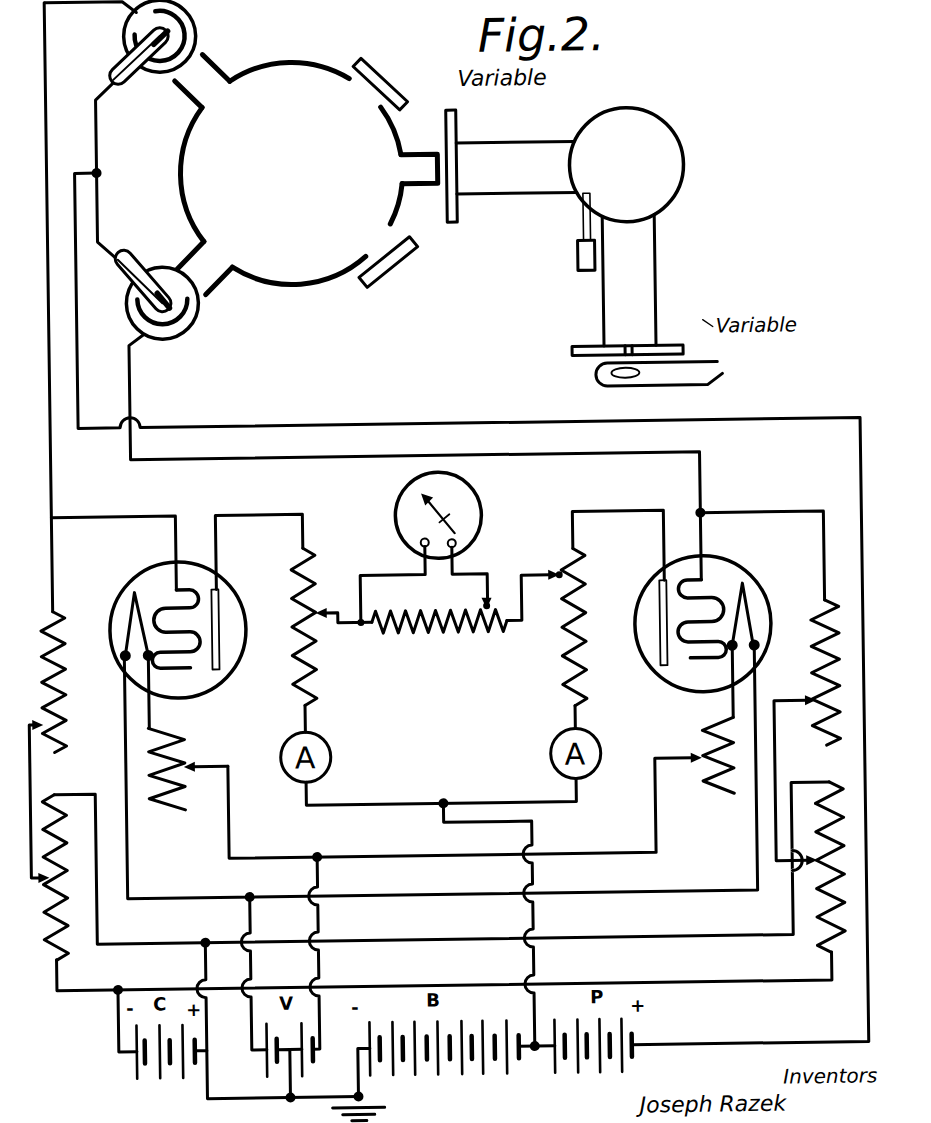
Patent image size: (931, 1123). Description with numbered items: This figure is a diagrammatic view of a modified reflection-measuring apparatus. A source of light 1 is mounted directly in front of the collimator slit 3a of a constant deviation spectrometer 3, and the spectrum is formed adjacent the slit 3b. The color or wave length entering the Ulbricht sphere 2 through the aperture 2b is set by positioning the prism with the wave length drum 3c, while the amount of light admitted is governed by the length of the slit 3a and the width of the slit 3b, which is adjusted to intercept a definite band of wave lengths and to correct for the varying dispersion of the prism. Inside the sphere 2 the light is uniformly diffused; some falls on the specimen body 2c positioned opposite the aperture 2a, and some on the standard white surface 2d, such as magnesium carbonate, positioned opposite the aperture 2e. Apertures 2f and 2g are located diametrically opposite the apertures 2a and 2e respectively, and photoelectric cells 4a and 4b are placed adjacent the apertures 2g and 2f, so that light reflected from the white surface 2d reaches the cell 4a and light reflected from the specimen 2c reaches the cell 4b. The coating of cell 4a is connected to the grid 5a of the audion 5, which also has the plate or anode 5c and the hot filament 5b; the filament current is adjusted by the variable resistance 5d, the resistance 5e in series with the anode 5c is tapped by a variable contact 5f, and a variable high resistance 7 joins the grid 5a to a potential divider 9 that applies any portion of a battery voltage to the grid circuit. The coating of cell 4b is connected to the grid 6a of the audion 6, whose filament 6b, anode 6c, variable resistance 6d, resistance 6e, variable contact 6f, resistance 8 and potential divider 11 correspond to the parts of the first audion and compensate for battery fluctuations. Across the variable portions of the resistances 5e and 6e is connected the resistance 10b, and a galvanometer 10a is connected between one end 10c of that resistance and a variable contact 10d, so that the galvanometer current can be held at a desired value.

The source of light 1 is at (710, 380).
The Ulbricht sphere 2 is at (291, 173).
The aperture 2a is at (374, 84).
The aperture 2b is at (426, 159).
The specimen body 2c is at (390, 76).
The standard white surface 2d is at (402, 272).
The aperture 2e is at (387, 241).
The aperture 2f is at (207, 259).
The aperture 2g is at (205, 68).
The constant deviation spectrometer 3 is at (696, 128).
The collimator slit 3a is at (633, 349).
The slit 3b is at (463, 163).
The wave length drum 3c is at (582, 248).
The photoelectric cell 4a is at (204, 33).
The photoelectric cell 4b is at (200, 318).
The audion 5 is at (153, 561).
The grid 5a is at (181, 516).
The hot filament 5b is at (122, 602).
The plate or anode 5c is at (217, 563).
The variable resistance 5d is at (180, 746).
The resistance 5e is at (319, 658).
The variable contact 5f is at (321, 598).
The audion 6 is at (748, 572).
The grid 6a is at (700, 558).
The hot filament 6b is at (746, 617).
The plate or anode 6c is at (659, 606).
The variable resistance 6d is at (704, 731).
The resistance 6e is at (562, 663).
The variable contact 6f is at (552, 571).
The variable high resistance 7 is at (58, 681).
The variable high resistance 8 is at (816, 655).
The potential divider 9 is at (59, 814).
The galvanometer 10a is at (484, 525).
The resistance 10b is at (431, 627).
The end of resistance 10c is at (361, 622).
The variable contact 10d is at (484, 597).
The potential divider 11 is at (817, 932).